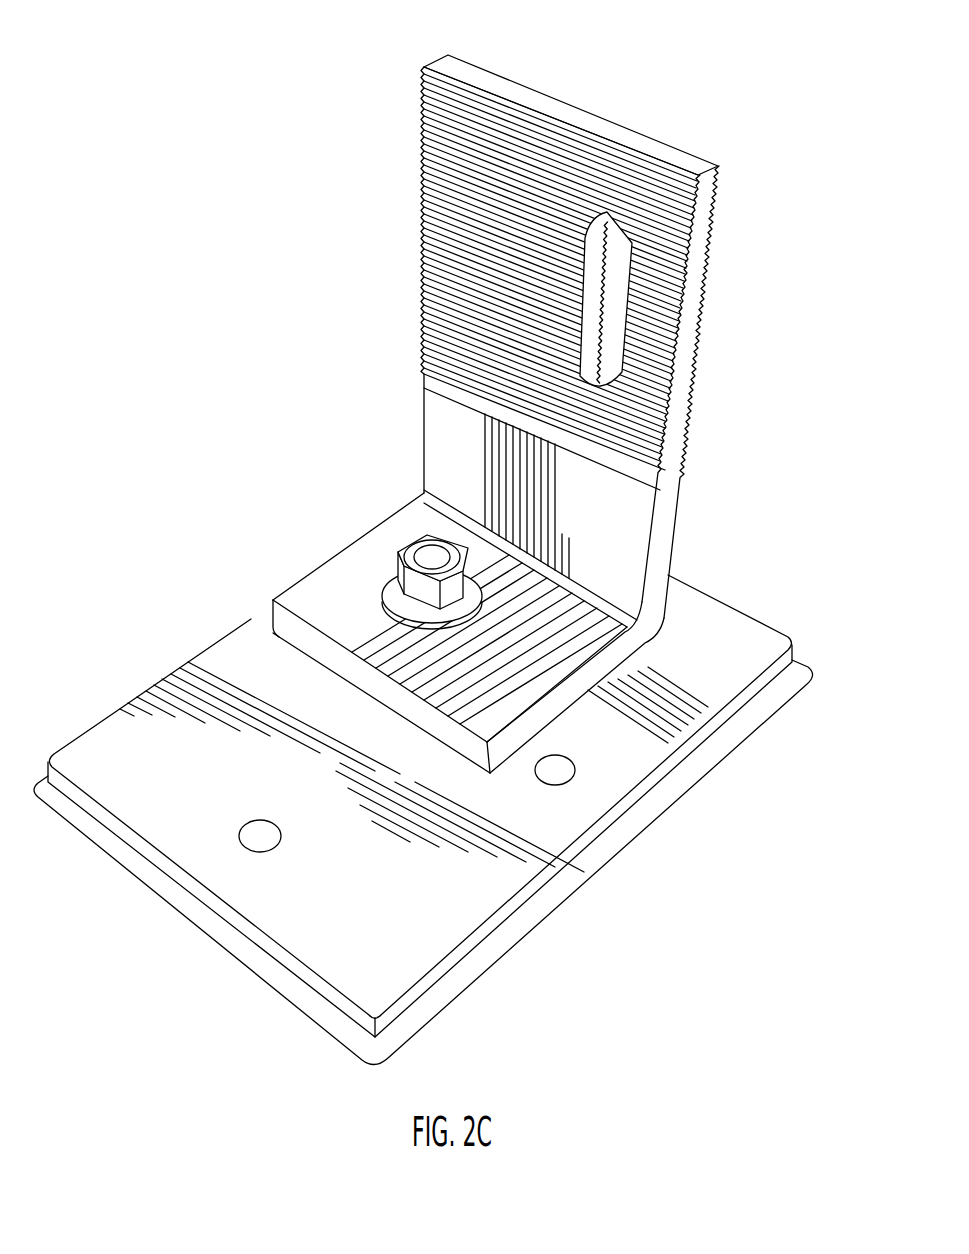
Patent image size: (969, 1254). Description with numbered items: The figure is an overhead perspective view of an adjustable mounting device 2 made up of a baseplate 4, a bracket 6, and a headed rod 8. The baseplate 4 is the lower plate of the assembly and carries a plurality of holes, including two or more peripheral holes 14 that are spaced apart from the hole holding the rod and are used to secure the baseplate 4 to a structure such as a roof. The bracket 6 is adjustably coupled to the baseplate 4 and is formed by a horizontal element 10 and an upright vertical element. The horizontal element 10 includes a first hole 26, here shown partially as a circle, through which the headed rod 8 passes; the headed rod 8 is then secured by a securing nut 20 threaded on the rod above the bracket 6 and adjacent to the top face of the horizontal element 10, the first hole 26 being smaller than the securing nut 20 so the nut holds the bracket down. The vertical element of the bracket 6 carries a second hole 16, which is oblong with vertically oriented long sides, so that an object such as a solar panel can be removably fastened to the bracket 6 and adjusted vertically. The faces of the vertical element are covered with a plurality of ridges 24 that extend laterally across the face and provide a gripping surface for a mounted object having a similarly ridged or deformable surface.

The adjustable mounting device 2 is at (508, 431).
The baseplate 4 is at (439, 820).
The bracket 6 is at (511, 414).
The headed rod 8 is at (469, 579).
The horizontal element 10 is at (445, 650).
The peripheral holes 14 is at (262, 838).
The second hole 16 is at (628, 313).
The securing nut 20 is at (457, 588).
The ridges 24 is at (450, 183).
The first hole 26 is at (378, 620).